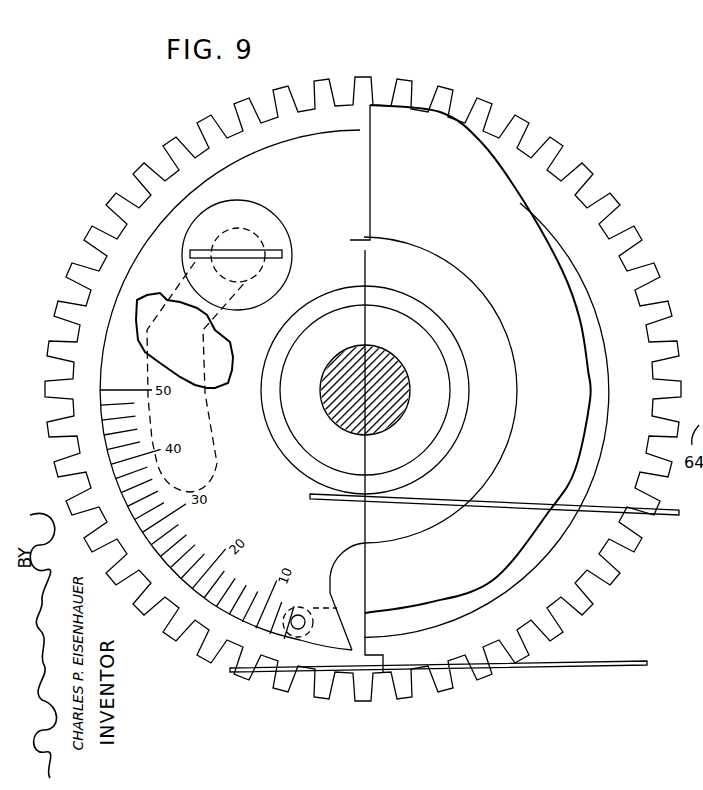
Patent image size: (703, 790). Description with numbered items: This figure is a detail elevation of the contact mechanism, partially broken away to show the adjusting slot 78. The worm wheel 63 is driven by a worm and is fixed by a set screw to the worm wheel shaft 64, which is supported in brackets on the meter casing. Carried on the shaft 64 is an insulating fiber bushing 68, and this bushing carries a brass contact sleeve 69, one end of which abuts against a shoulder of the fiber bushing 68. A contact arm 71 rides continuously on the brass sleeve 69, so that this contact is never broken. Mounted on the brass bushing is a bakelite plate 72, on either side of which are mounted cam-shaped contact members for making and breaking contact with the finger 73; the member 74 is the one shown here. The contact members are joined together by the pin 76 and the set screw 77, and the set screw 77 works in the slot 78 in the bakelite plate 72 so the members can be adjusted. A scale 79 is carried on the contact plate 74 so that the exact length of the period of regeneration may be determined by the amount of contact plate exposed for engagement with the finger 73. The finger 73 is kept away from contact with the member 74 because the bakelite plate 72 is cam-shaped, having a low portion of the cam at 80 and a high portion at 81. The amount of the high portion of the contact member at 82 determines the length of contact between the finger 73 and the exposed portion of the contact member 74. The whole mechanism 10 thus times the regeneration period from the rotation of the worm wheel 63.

The gear wheel 10 is at (363, 391).
The worm wheel 63 is at (617, 569).
The worm wheel shaft 64 is at (349, 353).
The insulating fiber bushing 68 is at (419, 333).
The brass contact sleeve 69 is at (455, 351).
The contact arm 71 is at (666, 517).
The bakelite plate 72 is at (460, 389).
The finger 73 is at (625, 668).
The cam-shaped contact member 74 is at (371, 207).
The pin 76 is at (300, 630).
The set screw 77 is at (276, 213).
The slot 78 is at (210, 338).
The scale 79 is at (108, 412).
The low portion of the cam 80 is at (592, 418).
The high portion of the cam 81 is at (194, 645).
The high portion of the contact members 82 is at (338, 652).